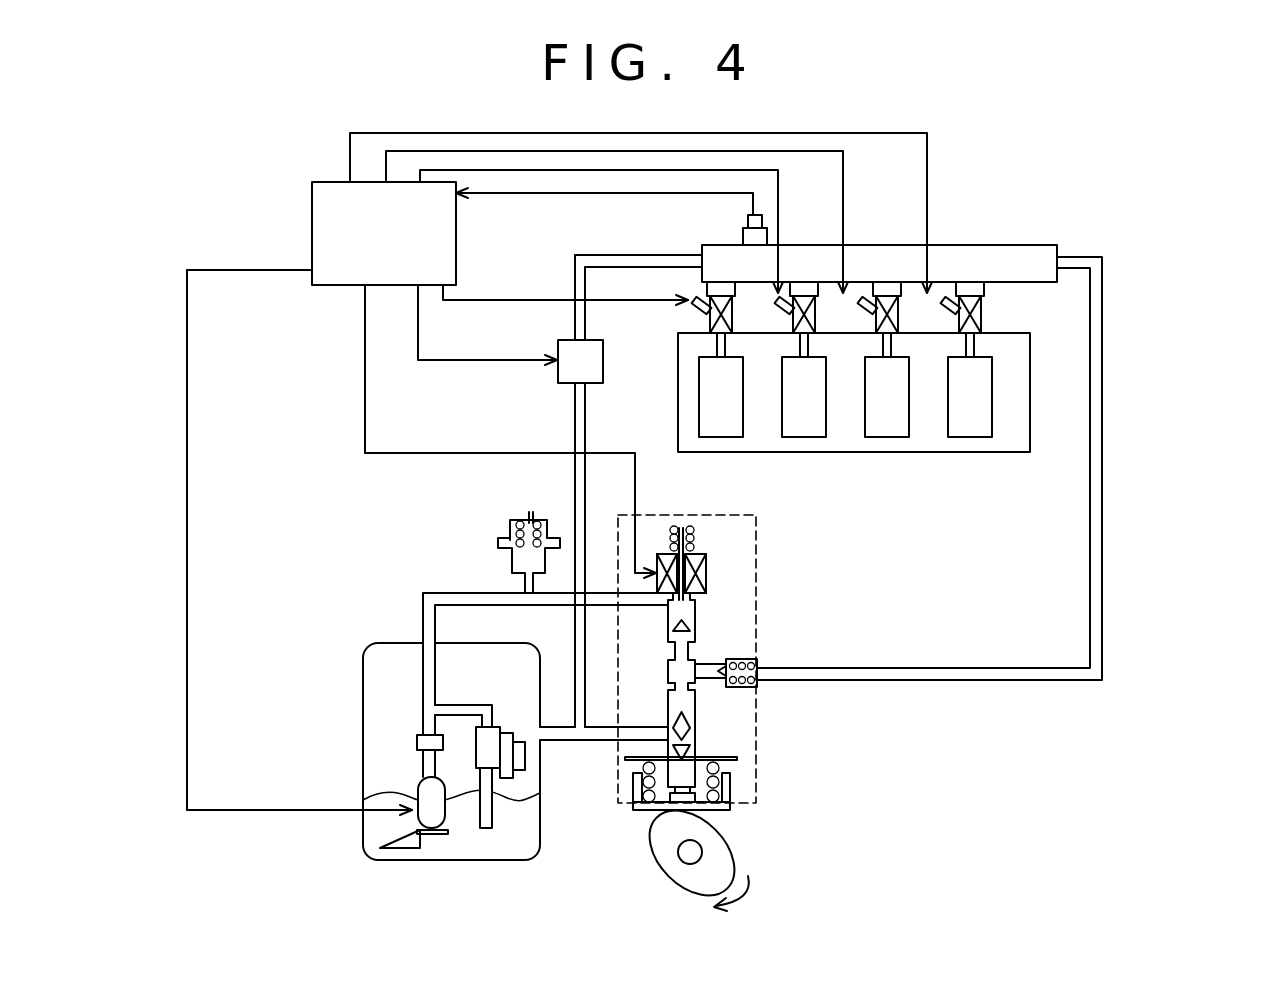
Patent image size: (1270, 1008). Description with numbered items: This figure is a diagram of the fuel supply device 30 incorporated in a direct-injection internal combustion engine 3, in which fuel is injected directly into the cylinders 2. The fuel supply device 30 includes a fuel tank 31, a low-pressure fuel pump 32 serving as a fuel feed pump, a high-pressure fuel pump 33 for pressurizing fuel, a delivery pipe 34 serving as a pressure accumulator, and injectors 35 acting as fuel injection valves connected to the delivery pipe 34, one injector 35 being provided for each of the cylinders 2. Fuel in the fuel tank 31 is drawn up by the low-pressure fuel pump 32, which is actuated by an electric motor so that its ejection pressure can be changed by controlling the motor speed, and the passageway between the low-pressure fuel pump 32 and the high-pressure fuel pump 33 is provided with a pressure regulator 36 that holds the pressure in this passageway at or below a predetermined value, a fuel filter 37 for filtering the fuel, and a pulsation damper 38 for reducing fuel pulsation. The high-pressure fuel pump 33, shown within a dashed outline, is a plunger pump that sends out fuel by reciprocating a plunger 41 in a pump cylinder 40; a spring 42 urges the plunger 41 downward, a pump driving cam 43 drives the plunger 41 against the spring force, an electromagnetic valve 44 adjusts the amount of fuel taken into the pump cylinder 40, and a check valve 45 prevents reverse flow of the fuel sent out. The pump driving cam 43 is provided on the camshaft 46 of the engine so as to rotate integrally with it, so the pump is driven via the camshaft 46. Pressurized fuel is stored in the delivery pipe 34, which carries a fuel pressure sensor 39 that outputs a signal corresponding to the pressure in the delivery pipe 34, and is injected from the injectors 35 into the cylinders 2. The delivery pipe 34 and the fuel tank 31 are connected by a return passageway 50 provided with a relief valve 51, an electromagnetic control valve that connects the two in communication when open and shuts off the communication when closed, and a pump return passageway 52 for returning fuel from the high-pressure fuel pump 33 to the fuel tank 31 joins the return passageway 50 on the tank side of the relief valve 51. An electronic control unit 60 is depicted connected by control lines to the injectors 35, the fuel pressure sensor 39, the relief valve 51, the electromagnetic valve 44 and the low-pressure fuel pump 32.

The cylinder 2 is at (728, 427).
The internal combustion engine 3 is at (857, 455).
The fuel supply device 30 is at (1153, 222).
The fuel tank 31 is at (363, 662).
The low-pressure fuel pump 32 is at (418, 792).
The high-pressure fuel pump 33 is at (770, 610).
The delivery pipe 34 is at (1040, 245).
The injector 35 is at (816, 318).
The pressure regulator 36 is at (510, 780).
The fuel filter 37 is at (417, 742).
The pulsation damper 38 is at (498, 542).
The fuel pressure sensor 39 is at (745, 222).
The pump cylinder 40 is at (683, 700).
The plunger 41 is at (700, 745).
The spring 42 is at (727, 768).
The pump driving cam 43 is at (735, 856).
The electromagnetic valve 44 is at (725, 565).
The check valve 45 is at (740, 688).
The camshaft 46 is at (685, 862).
The return passageway 50 is at (575, 408).
The relief valve 51 is at (558, 345).
The pump return passageway 52 is at (605, 745).
The ECU 60 is at (312, 235).